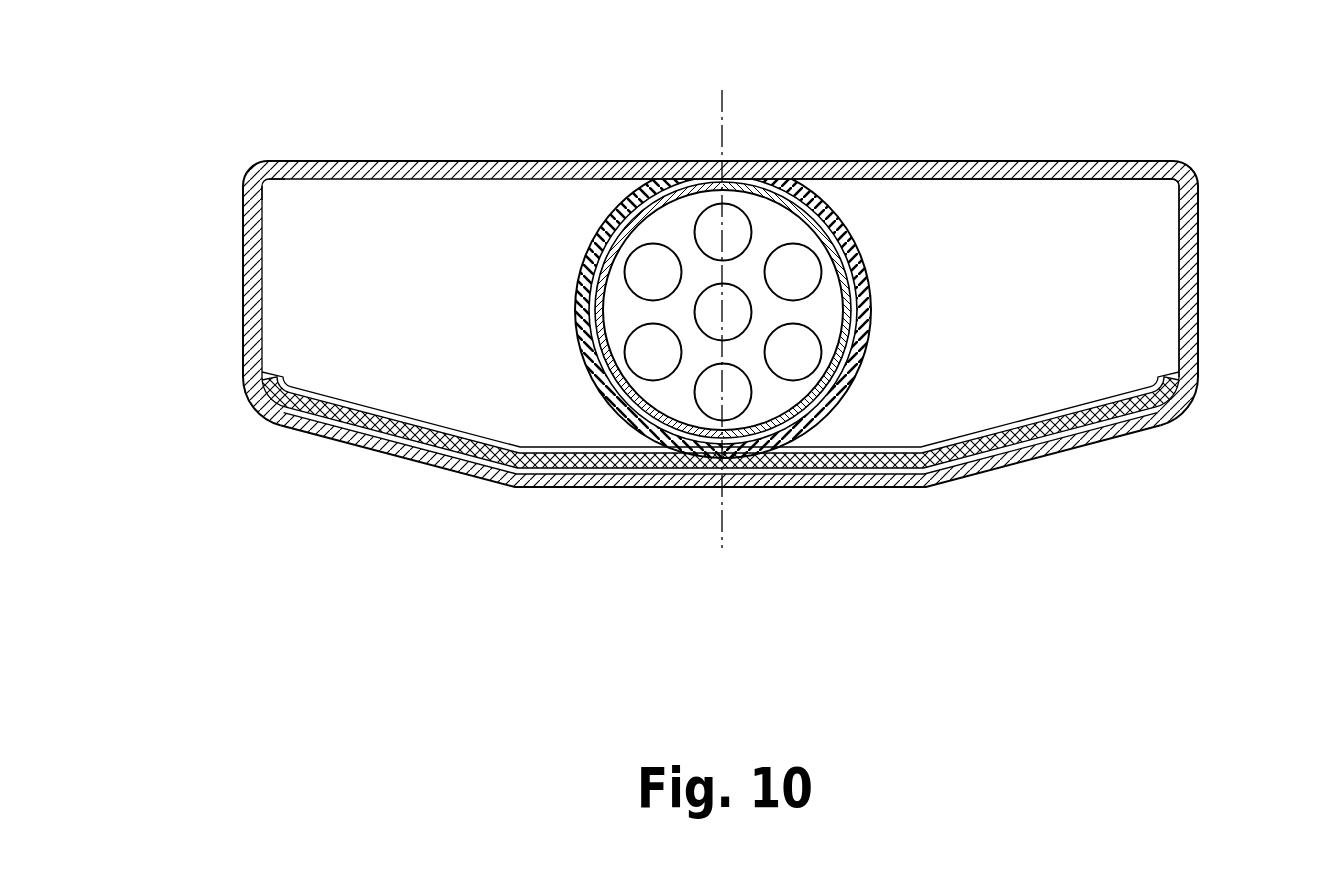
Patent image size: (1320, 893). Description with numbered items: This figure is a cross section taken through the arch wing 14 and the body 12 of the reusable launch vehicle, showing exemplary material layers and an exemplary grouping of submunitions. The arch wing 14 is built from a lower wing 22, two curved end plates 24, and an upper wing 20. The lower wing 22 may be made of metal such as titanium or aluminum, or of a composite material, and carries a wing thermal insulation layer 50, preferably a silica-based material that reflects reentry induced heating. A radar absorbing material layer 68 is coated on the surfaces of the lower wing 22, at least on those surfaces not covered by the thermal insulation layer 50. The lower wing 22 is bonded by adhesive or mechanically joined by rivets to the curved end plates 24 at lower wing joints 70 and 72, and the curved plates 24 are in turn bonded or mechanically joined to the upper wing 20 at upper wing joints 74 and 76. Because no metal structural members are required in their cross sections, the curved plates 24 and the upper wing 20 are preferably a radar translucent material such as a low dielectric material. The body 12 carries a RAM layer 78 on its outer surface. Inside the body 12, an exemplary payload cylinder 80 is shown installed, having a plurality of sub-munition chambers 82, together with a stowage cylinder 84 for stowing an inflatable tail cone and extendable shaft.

The body 12 is at (623, 227).
The arch wing 14 is at (396, 168).
The upper wing 20 is at (1113, 160).
The lower wing 22 is at (460, 458).
The curved end plates 24 is at (1200, 268).
The wing thermal insulation layer 50 is at (1057, 453).
The radar absorbing material layer 68 is at (427, 424).
The lower wing joint 70 is at (245, 362).
The lower wing joint 72 is at (1198, 358).
The upper wing joint 74 is at (250, 182).
The upper wing joint 76 is at (1192, 183).
The RAM layer 78 is at (842, 240).
The payload cylinder 80 is at (655, 397).
The sub-munition chambers 82 is at (791, 363).
The stowage cylinder 84 is at (712, 320).